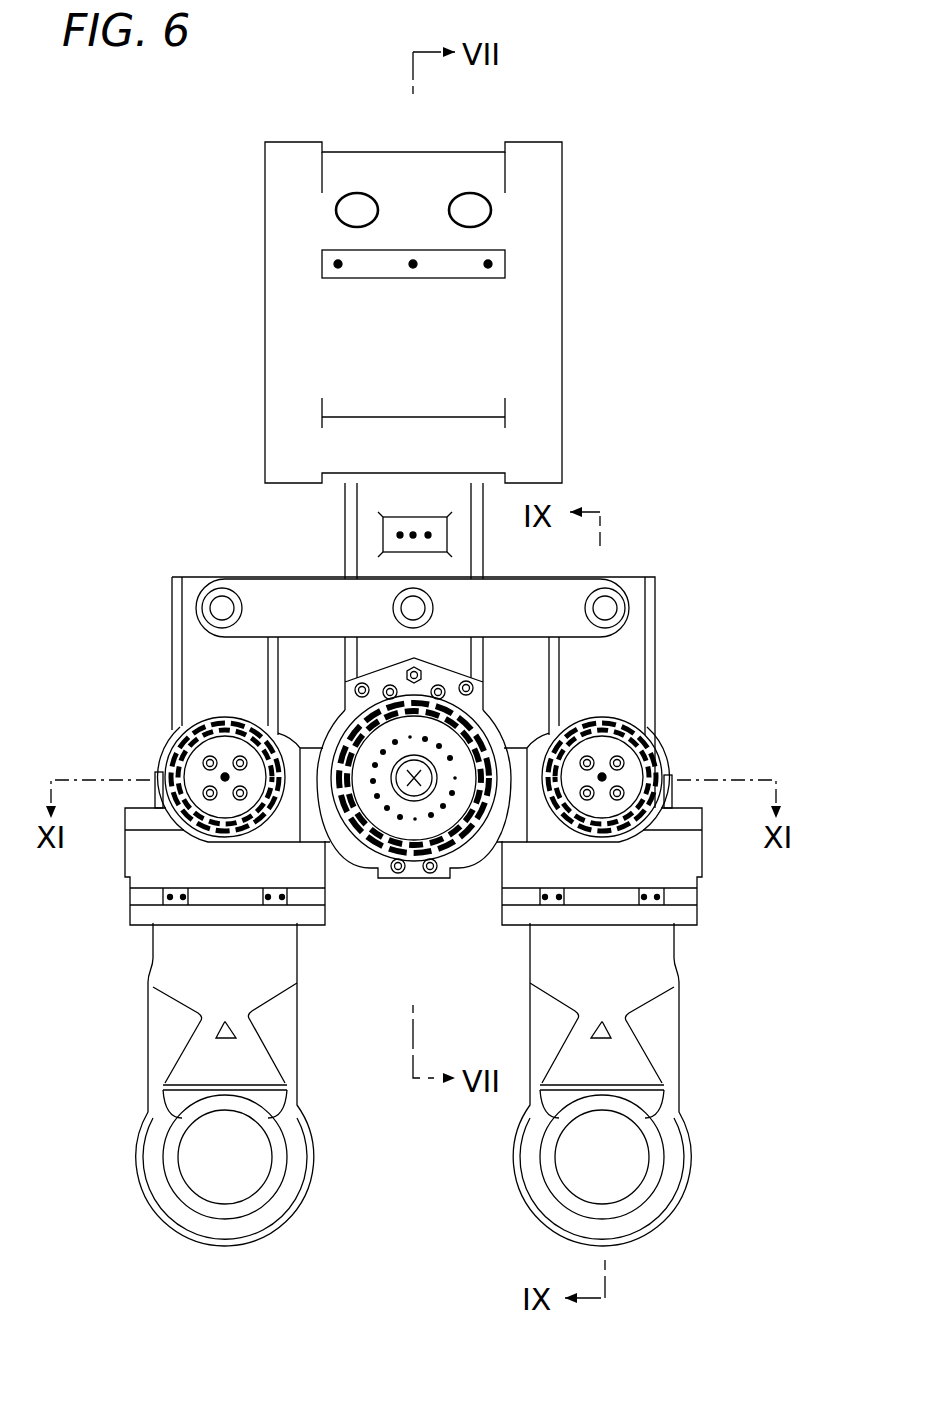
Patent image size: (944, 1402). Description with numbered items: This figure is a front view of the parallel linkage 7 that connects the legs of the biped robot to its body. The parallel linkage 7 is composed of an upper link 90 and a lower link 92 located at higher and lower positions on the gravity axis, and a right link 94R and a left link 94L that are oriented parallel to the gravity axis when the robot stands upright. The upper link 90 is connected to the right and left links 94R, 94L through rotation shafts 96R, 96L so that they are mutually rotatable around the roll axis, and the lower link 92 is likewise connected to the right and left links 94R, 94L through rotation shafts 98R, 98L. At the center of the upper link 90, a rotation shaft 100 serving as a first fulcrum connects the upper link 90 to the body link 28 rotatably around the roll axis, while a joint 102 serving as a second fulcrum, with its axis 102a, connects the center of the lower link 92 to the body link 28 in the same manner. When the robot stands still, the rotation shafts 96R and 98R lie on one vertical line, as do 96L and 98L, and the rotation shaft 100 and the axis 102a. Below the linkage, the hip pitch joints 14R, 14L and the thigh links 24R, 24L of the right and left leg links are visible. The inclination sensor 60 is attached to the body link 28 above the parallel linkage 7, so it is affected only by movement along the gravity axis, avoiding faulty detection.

The parallel linkage 7 is at (641, 528).
The hip pitch joint (right) 14R is at (205, 1165).
The hip pitch joint (left) 14L is at (612, 1158).
The thigh link (right) 24R is at (140, 855).
The thigh link (left) 24L is at (668, 858).
The body link 28 is at (370, 502).
The inclination sensor 60 is at (383, 540).
The upper link 90 is at (318, 603).
The lower link 92 is at (516, 830).
The right link 94R is at (208, 657).
The left link 94L is at (625, 668).
The rotation shaft (right, upper) 96R is at (221, 605).
The rotation shaft (left, upper) 96L is at (606, 605).
The rotation shaft (right, lower) 98R is at (165, 740).
The rotation shaft (left, lower) 98L is at (655, 745).
The rotation shaft (first fulcrum) 100 is at (418, 608).
The joint (second fulcrum) 102 is at (388, 822).
The axis of joint 102a is at (418, 790).